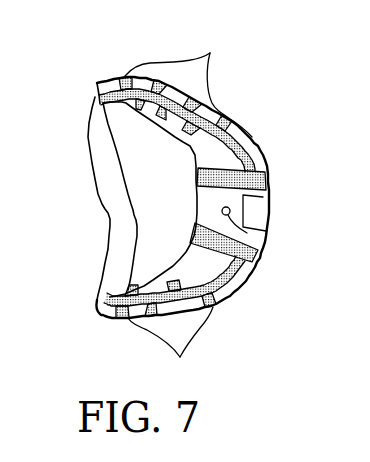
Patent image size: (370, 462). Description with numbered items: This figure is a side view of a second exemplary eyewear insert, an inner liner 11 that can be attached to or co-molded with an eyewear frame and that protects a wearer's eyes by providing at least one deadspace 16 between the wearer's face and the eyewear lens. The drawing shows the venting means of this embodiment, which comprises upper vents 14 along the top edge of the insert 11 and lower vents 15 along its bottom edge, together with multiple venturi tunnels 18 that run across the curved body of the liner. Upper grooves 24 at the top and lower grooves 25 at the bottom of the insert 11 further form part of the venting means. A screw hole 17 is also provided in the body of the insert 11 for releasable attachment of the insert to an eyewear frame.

The insert 11 is at (110, 192).
The upper vents 14 is at (210, 53).
The lower vents 15 is at (180, 357).
The deadspace 16 is at (140, 228).
The screw hole 17 is at (262, 234).
The venturi tunnels 18 is at (267, 175).
The upper grooves 24 is at (97, 95).
The lower grooves 25 is at (108, 314).